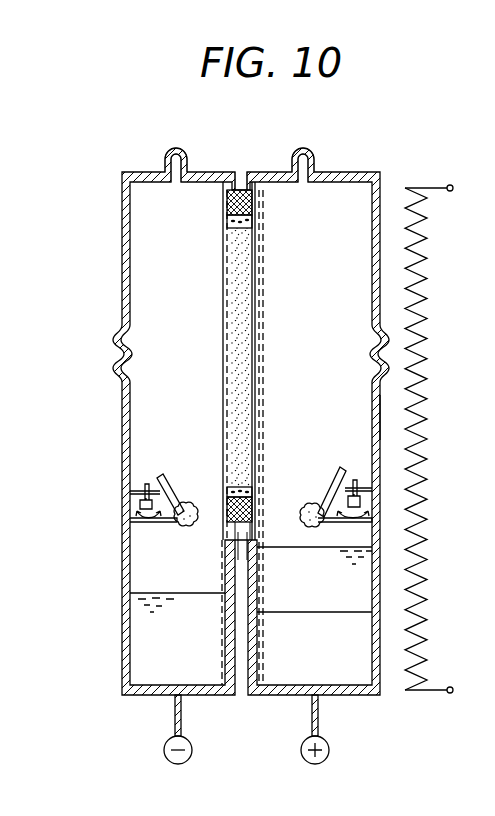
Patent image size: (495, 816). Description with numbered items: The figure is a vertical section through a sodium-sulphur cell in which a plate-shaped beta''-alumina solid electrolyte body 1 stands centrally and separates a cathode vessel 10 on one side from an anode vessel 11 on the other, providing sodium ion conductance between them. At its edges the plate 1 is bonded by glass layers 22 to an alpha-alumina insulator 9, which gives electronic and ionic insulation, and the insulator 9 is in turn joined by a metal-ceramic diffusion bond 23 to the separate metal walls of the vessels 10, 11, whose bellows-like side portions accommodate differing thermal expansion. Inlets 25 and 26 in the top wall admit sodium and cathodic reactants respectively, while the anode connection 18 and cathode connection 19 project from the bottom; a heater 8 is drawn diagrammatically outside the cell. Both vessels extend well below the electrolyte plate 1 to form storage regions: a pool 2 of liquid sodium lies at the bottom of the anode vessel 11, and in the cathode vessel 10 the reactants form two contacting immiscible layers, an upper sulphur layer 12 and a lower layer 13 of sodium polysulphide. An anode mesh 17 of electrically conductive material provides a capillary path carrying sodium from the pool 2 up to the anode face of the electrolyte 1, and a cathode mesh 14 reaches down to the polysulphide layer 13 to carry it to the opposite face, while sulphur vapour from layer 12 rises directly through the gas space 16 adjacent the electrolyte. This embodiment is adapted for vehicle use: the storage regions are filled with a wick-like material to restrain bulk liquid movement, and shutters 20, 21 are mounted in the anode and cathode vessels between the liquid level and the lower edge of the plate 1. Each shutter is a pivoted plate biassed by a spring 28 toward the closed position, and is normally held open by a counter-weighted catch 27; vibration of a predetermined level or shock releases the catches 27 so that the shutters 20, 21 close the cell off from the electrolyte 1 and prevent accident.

The solid electrolyte body 1 is at (232, 263).
The pool of liquid sodium 2 is at (150, 641).
The heater 8 is at (420, 479).
The alpha-alumina insulator 9 is at (239, 182).
The cathode vessel 10 is at (383, 421).
The anode vessel 11 is at (128, 236).
The sulphur layer 12 is at (360, 593).
The sodium polysulphide layer 13 is at (360, 669).
The cathode mesh 14 is at (257, 262).
The gas space 16 is at (350, 324).
The anode mesh 17 is at (226, 293).
The anode connection 18 is at (193, 749).
The cathode connection 19 is at (330, 749).
The shutter 20 is at (163, 474).
The shutter 21 is at (337, 469).
The glass layers 22 is at (223, 215).
The metal-ceramic diffusion bond 23 is at (247, 178).
The sodium inlet 25 is at (179, 150).
The cathodic reactant inlet 26 is at (305, 150).
The counter-weighted catches 27 is at (362, 500).
The spring 28 is at (192, 492).